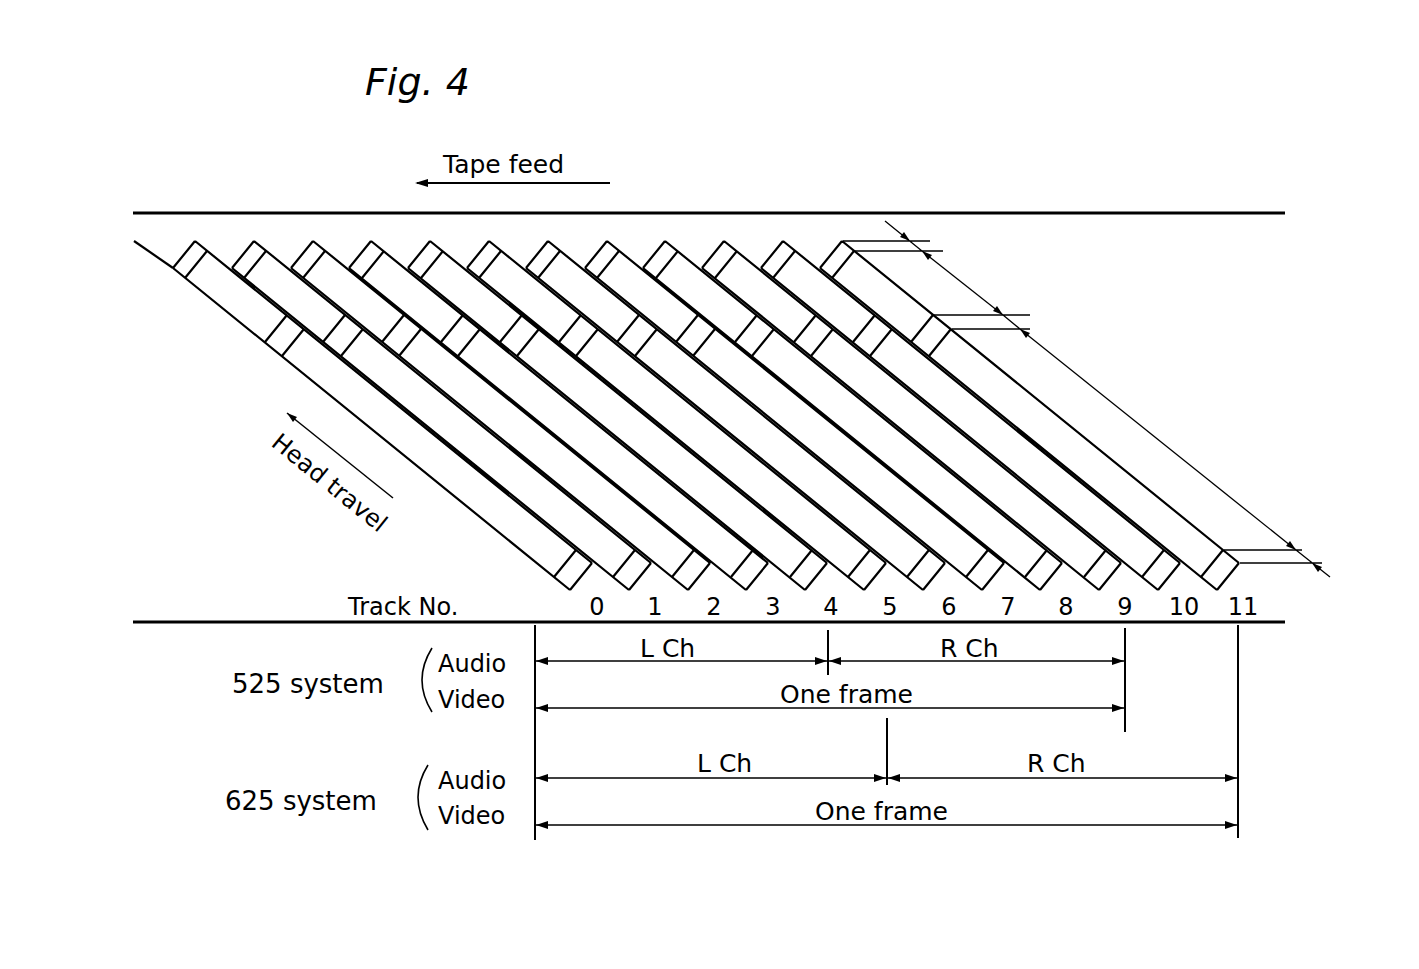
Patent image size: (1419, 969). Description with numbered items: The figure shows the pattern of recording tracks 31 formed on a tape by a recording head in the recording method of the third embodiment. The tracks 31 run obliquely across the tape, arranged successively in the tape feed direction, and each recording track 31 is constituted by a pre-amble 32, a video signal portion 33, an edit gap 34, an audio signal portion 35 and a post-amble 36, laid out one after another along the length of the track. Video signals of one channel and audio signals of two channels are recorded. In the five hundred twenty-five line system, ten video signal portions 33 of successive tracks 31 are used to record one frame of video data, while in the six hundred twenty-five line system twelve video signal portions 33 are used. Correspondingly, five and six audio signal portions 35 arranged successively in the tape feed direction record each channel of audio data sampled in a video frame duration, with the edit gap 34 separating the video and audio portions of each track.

The recording track 31 is at (248, 310).
The pre-amble 32 is at (1308, 551).
The video signal portion 33 is at (1156, 430).
The edit gap 34 is at (1040, 322).
The audio signal portion 35 is at (985, 289).
The post-amble 36 is at (948, 246).